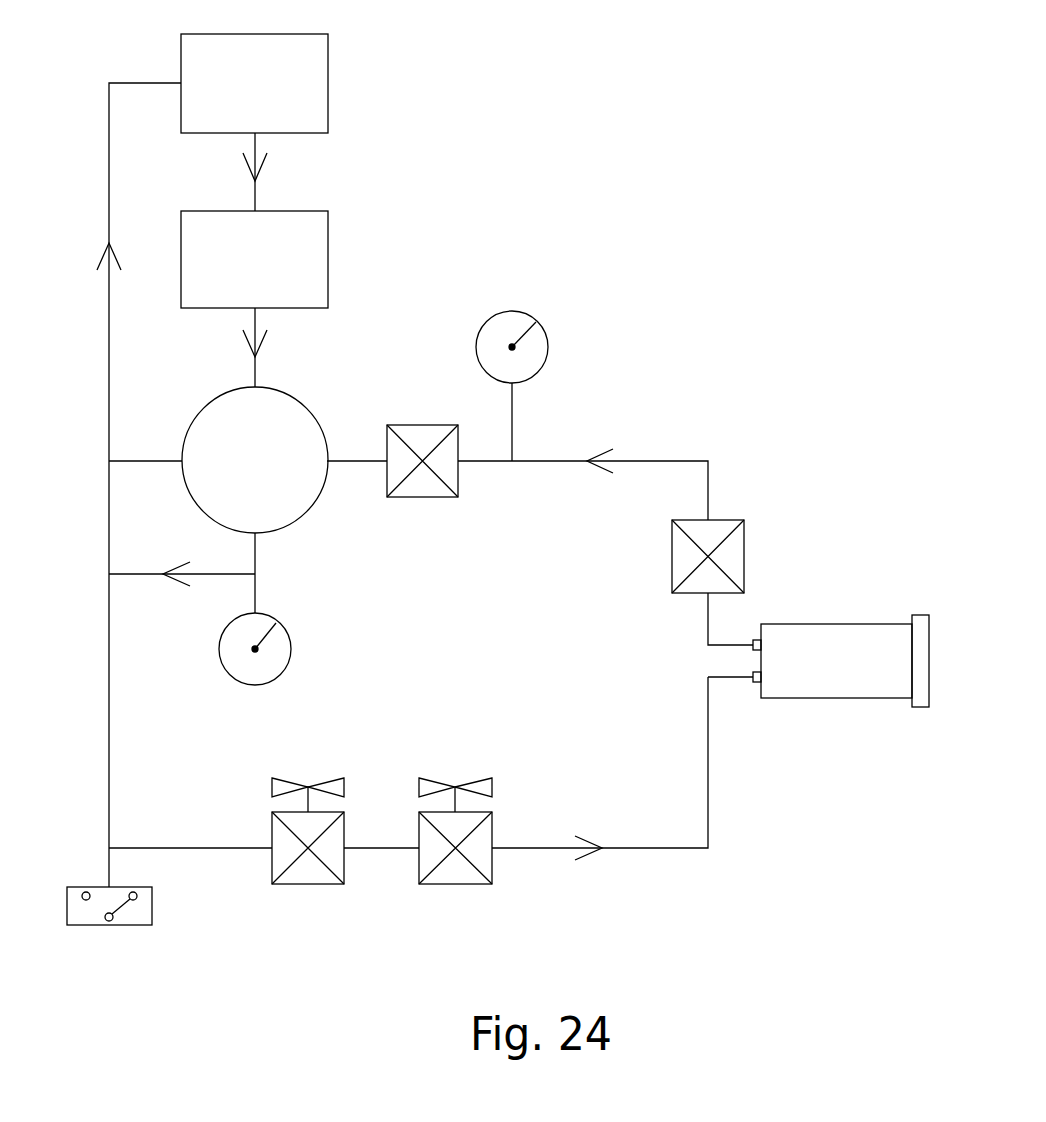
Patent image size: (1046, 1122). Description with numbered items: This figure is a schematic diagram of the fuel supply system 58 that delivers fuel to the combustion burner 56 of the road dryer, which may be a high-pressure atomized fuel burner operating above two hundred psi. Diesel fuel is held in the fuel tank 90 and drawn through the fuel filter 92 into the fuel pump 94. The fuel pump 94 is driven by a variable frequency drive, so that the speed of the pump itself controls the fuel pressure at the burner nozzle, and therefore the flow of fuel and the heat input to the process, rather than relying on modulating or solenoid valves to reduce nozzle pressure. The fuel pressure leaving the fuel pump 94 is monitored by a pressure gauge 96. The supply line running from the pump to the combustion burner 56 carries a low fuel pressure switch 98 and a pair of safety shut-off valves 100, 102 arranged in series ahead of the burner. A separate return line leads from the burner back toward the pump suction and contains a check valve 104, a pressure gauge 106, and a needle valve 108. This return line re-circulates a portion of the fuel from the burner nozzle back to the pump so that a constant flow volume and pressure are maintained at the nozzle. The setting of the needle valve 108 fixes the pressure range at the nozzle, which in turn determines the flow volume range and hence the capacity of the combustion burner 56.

The fuel supply system 58 is at (600, 173).
The fuel tank 90 is at (328, 75).
The fuel filter 92 is at (328, 255).
The fuel pump 94 is at (197, 508).
The pressure gauge 96 is at (290, 662).
The low fuel pressure switch 98 is at (137, 927).
The safety shut-off valve 100 is at (313, 885).
The safety shut-off valve 102 is at (464, 885).
The check valve 104 is at (745, 547).
The pressure gauge 106 is at (550, 347).
The needle valve 108 is at (425, 423).
The combustion burner 56 is at (857, 698).